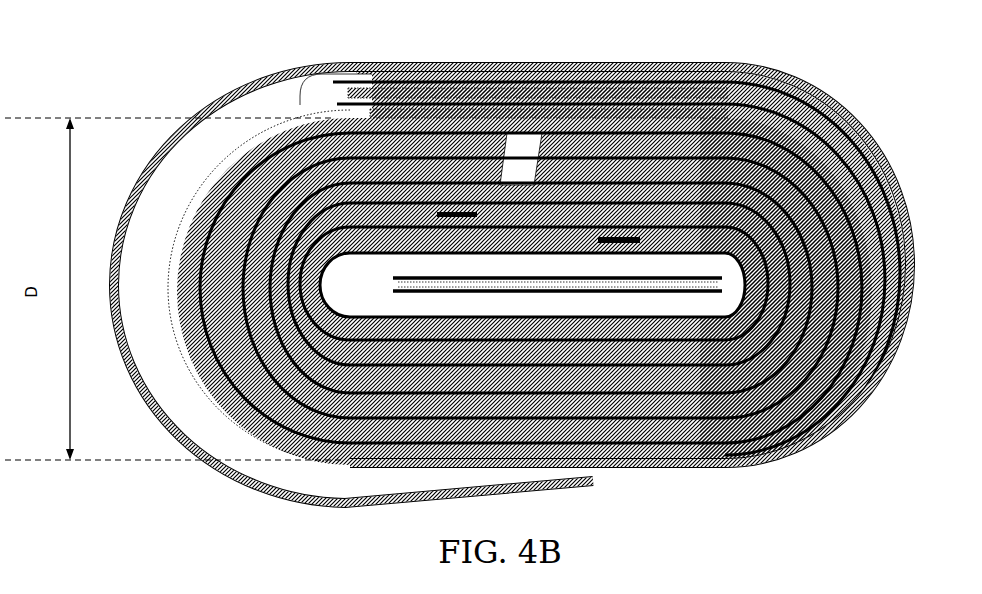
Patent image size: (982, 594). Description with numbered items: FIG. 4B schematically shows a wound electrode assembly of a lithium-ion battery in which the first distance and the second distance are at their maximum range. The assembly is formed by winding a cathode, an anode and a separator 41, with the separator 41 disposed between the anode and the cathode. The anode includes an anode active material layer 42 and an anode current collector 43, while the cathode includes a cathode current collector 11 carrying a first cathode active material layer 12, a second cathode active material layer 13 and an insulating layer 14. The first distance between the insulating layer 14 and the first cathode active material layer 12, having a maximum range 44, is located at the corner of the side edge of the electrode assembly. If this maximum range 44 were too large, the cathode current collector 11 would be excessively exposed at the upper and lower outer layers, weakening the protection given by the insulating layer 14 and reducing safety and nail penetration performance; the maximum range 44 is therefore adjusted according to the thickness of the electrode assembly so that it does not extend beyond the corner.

The cathode current collector 11 is at (428, 116).
The first cathode active material layer 12 is at (384, 98).
The second cathode active material layer 13 is at (363, 81).
The insulating layer 14 is at (350, 463).
The separator 41 is at (333, 103).
The anode active material layer 42 is at (503, 133).
The anode current collector 43 is at (557, 92).
The maximum range of the first distance 44 is at (200, 187).